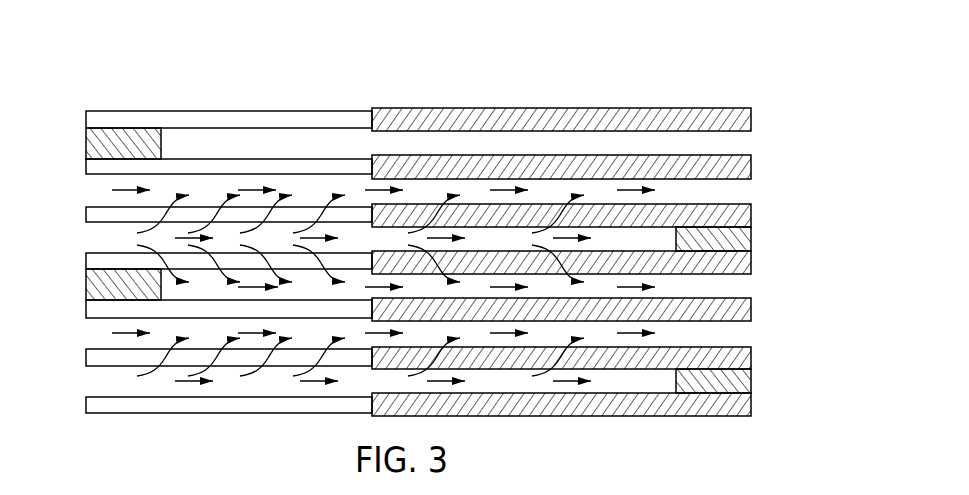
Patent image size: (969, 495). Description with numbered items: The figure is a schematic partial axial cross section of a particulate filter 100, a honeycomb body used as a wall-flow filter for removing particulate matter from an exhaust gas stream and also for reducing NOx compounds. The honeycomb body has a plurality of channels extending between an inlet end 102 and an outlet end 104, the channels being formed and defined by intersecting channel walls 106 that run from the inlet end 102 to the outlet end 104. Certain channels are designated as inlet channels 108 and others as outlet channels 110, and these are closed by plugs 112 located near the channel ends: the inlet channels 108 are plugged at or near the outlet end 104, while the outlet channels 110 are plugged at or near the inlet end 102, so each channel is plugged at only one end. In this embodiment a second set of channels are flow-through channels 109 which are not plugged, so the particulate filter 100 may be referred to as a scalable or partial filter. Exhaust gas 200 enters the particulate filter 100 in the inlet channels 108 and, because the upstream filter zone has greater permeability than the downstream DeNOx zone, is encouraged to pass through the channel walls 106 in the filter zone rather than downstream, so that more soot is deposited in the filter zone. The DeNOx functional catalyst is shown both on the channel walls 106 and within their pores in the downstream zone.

The particulate filter 100 is at (658, 82).
The inlet end 102 is at (46, 82).
The outlet end 104 is at (765, 105).
The channel walls 106 is at (268, 111).
The inlet channels 108 is at (80, 248).
The flow-through channels 109 is at (83, 190).
The outlet channels 110 is at (752, 143).
The plugs 112 is at (85, 140).
The exhaust gas 200 is at (86, 238).